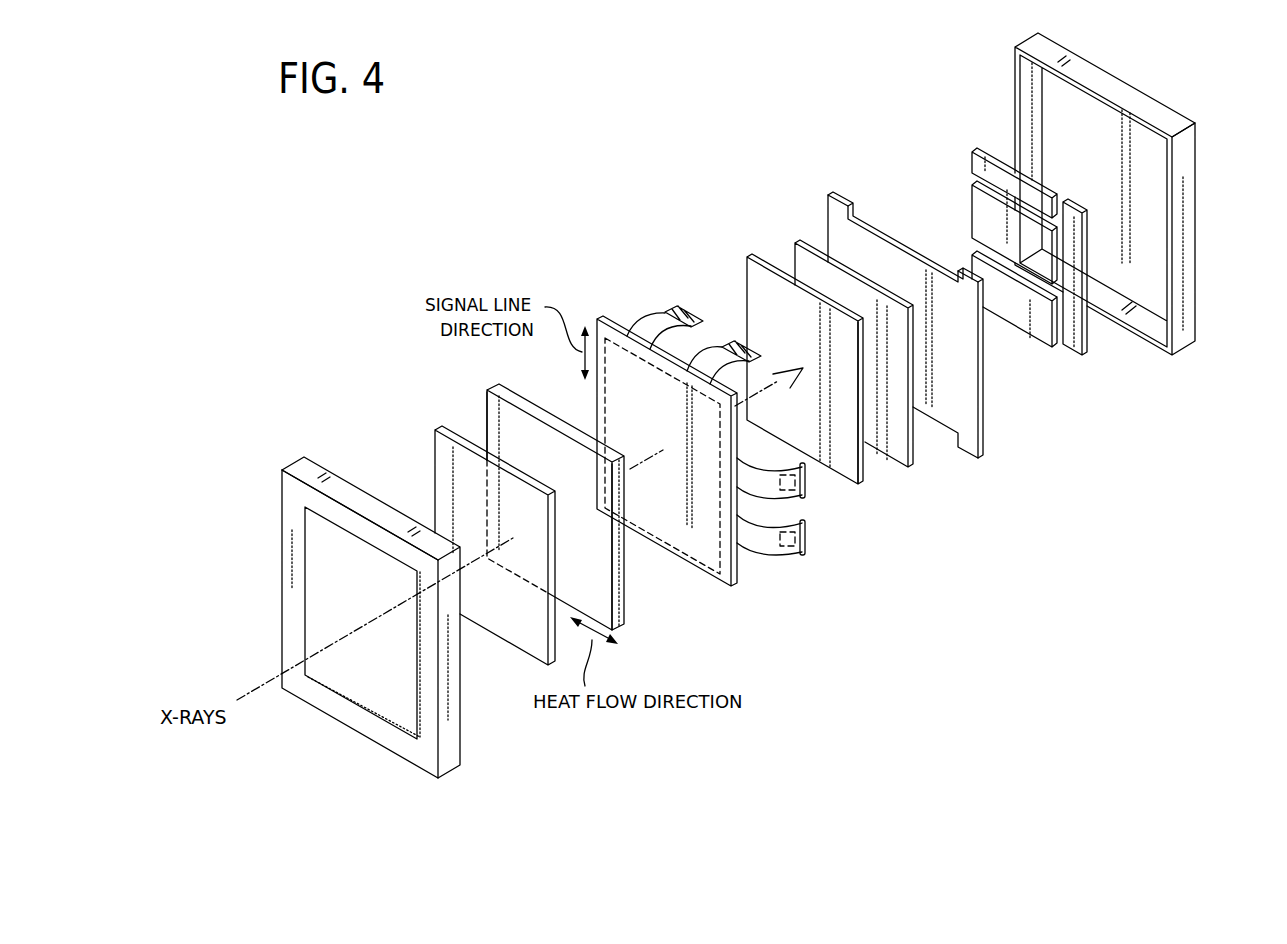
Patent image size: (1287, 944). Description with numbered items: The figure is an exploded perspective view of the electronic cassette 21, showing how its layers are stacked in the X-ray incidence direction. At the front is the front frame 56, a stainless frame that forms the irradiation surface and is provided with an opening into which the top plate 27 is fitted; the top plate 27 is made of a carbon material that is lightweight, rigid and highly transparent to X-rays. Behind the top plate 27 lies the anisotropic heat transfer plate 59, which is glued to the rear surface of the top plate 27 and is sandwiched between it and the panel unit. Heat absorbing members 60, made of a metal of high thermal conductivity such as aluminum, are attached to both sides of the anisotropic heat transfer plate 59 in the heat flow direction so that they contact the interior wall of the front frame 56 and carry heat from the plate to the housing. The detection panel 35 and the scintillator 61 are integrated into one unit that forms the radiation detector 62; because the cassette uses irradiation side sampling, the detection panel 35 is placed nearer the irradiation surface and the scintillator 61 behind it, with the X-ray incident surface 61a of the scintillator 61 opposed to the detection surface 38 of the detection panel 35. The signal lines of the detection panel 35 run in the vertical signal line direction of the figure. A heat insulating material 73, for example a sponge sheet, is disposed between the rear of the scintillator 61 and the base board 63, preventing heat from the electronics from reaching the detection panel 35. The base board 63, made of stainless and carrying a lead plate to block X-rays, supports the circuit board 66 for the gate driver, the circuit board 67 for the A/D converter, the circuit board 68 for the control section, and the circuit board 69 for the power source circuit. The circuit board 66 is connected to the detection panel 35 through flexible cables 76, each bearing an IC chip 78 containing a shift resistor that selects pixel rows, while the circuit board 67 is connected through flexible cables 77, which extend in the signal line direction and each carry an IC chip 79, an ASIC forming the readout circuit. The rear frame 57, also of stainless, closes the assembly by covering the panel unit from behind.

The electronic cassette 21 is at (968, 500).
The top plate 27 is at (440, 451).
The detection panel 35 is at (597, 313).
The detection surface 38 is at (615, 340).
The front frame 56 is at (312, 462).
The rear frame 57 is at (1197, 251).
The anisotropic heat transfer plate 59 is at (598, 577).
The heat absorbing members 60 is at (492, 415).
The scintillator 61 is at (746, 254).
The X-ray incident surface 61a is at (847, 460).
The radiation detector 62 is at (733, 183).
The base board 63 is at (828, 196).
The circuit board 66 is at (1083, 356).
The circuit board 67 is at (970, 160).
The circuit board 68 is at (970, 208).
The circuit board 69 is at (970, 267).
The heat insulating material 73 is at (805, 243).
The flexible cables 76 is at (803, 498).
The flexible cables 77 is at (694, 313).
The IC chip 78 is at (788, 546).
The IC chip 79 is at (742, 344).